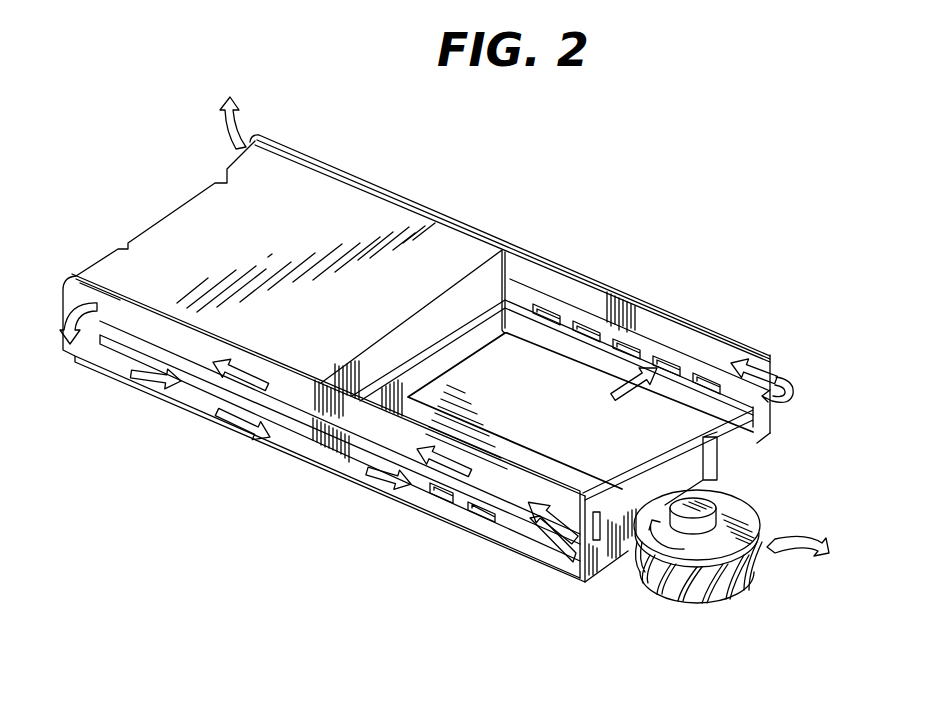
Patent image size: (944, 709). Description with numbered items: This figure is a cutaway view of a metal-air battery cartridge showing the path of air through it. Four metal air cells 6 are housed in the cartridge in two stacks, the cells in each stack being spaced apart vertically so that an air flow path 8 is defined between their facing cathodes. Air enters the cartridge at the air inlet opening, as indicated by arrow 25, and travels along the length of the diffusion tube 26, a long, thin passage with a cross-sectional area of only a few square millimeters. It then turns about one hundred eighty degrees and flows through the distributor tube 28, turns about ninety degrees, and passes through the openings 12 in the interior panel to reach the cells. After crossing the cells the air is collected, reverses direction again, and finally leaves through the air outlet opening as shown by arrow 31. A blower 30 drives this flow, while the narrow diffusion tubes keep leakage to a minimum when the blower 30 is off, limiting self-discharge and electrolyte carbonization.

The metal air cells 6 is at (357, 209).
The air flow path 8 is at (510, 296).
The openings 12 is at (435, 487).
The arrow 25 is at (560, 525).
The diffusion tube 26 is at (127, 320).
The distributor tube 28 is at (110, 358).
The blower 30 is at (700, 600).
The arrow 31 is at (226, 127).